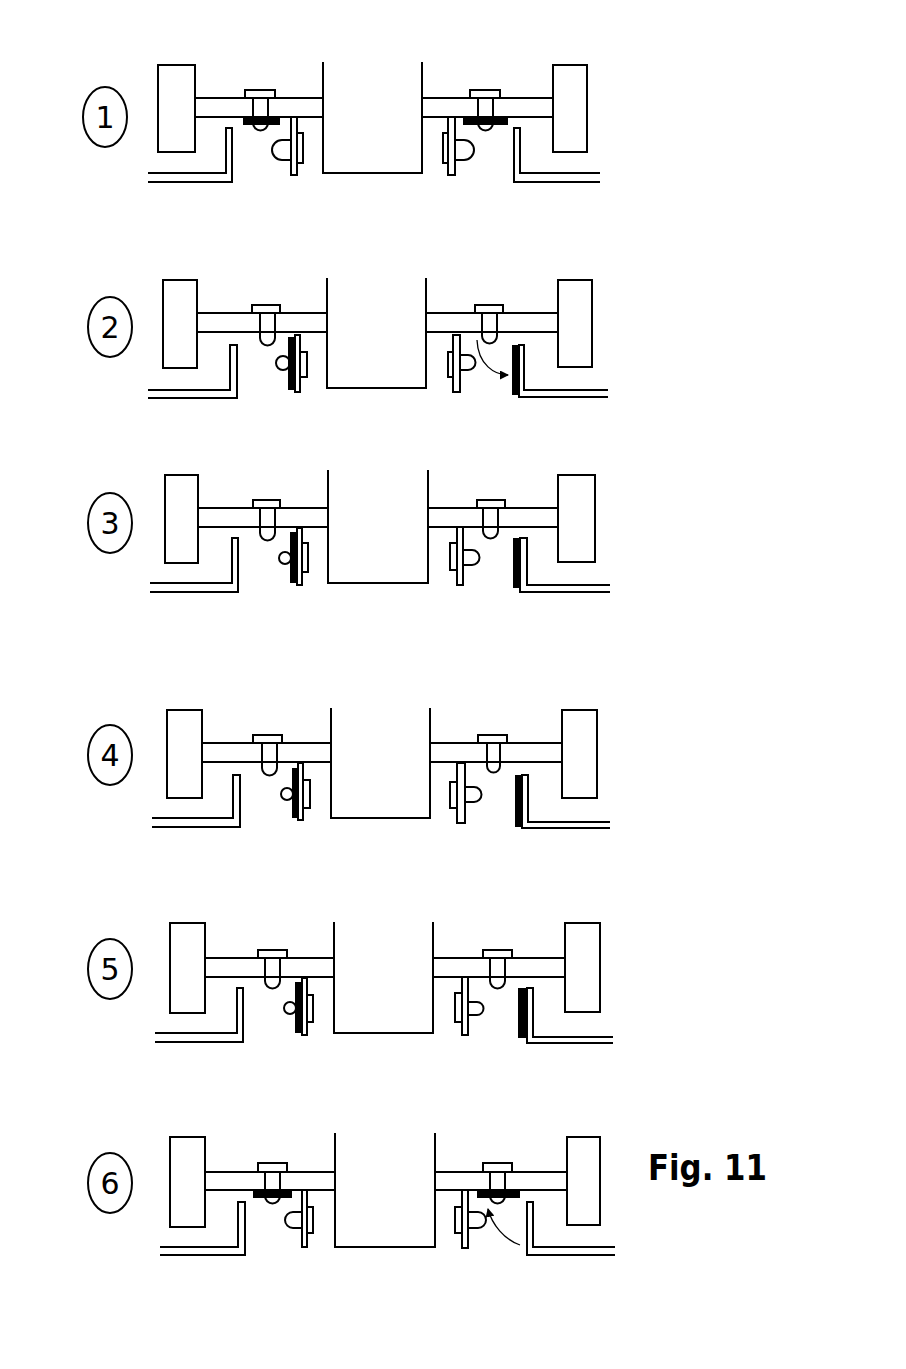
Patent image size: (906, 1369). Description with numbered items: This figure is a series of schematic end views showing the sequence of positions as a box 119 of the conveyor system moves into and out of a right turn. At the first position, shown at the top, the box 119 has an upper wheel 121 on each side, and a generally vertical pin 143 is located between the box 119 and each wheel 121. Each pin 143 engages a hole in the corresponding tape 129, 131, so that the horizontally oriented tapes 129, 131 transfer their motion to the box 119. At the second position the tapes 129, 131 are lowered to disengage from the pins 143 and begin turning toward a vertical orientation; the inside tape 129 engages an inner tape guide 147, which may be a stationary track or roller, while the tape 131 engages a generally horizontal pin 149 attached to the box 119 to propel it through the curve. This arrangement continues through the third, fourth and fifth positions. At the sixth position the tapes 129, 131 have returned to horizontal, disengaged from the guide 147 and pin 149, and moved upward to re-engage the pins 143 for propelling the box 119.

The box 119 is at (403, 132).
The upper wheel 121 is at (173, 92).
The tape 129 is at (502, 127).
The tape 131 is at (248, 125).
The pin 143 is at (263, 110).
The inner tape guide 147 is at (523, 393).
The pin 149 is at (247, 345).